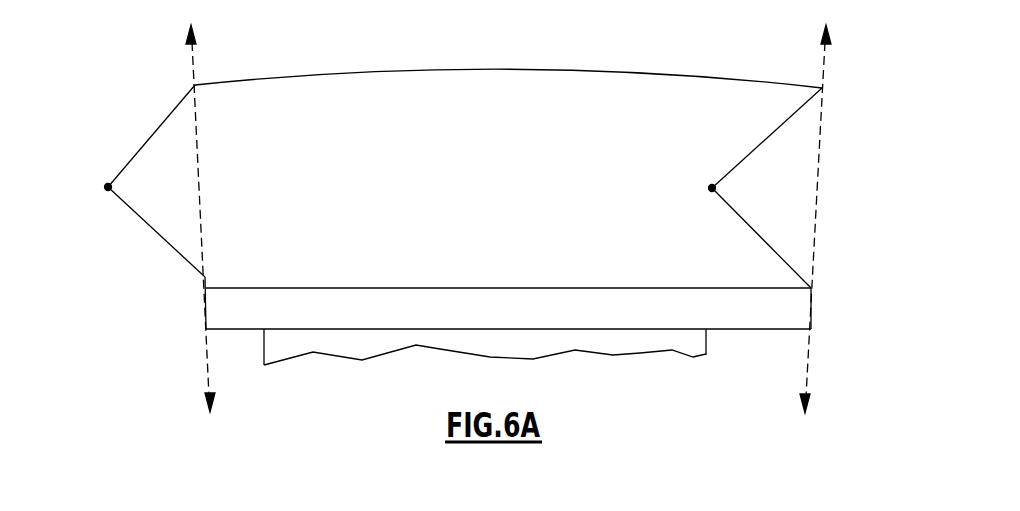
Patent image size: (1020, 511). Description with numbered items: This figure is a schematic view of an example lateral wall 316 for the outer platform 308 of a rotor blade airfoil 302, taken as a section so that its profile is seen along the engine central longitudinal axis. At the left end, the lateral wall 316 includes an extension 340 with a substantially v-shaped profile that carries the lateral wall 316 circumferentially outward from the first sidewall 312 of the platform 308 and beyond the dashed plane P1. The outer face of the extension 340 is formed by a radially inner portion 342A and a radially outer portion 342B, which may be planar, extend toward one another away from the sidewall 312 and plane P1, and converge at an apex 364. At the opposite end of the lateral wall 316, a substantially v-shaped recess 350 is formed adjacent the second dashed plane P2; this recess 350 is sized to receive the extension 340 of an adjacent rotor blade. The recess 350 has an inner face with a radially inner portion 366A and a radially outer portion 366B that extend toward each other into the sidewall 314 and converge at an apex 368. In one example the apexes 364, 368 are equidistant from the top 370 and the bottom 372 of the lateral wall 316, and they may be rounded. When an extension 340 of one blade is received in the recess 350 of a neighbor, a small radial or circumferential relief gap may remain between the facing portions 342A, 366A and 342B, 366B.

The airfoil 302 is at (700, 342).
The platform 308 is at (508, 288).
The first sidewall 312 is at (206, 306).
The sidewall 314 is at (812, 320).
The lateral wall 316 is at (617, 104).
The extension 340 is at (502, 126).
The radially inner portion 342A is at (159, 236).
The radially outer portion 342B is at (159, 134).
The recess 350 is at (764, 188).
The apex 364 is at (121, 189).
The radially inner portion 366A is at (753, 231).
The radially outer portion 366B is at (765, 150).
The apex 368 is at (711, 188).
The top 370 is at (378, 74).
The bottom 372 is at (375, 289).
The plane P1 is at (195, 68).
The plane P2 is at (824, 60).